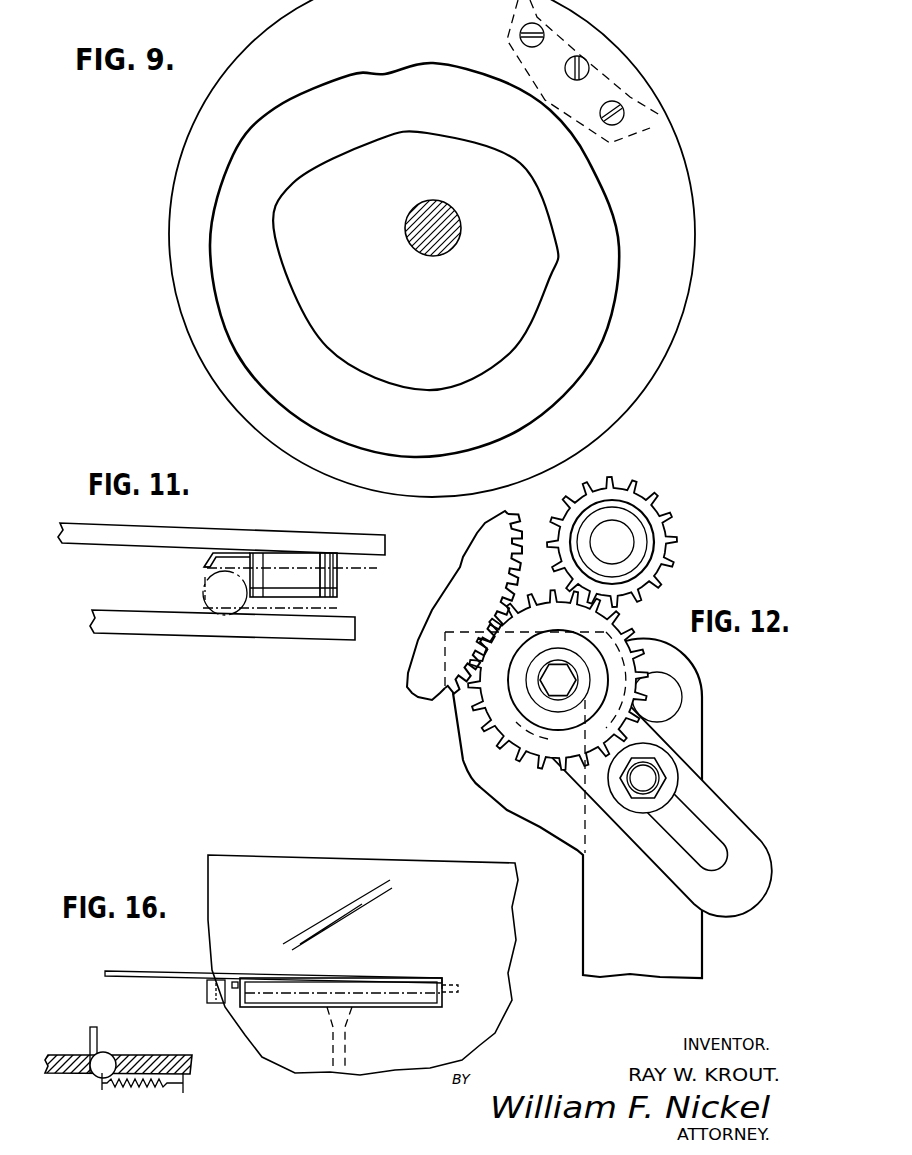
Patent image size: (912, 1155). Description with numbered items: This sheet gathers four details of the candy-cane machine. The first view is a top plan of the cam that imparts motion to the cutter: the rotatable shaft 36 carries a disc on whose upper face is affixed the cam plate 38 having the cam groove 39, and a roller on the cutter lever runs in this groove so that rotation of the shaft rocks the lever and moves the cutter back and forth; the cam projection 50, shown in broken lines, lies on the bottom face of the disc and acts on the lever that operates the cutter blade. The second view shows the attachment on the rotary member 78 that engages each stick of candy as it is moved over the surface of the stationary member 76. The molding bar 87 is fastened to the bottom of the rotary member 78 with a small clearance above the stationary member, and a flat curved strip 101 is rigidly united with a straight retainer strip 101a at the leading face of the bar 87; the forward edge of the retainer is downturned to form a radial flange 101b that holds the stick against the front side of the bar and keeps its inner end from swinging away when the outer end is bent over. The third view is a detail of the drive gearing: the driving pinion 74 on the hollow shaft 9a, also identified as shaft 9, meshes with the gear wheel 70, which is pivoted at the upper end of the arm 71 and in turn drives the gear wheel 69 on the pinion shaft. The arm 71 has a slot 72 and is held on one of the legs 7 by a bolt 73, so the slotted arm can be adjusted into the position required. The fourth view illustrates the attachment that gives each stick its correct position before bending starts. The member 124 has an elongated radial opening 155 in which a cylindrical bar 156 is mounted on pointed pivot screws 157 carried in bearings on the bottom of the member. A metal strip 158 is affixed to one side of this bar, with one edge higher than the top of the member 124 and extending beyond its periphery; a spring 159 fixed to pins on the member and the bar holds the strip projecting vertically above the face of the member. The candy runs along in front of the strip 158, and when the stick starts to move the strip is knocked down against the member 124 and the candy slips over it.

In FIG. 12, the legs 7 is at (697, 951).
In FIG. 12, the hollow shaft 9 is at (640, 530).
In FIG. 12, the hollow shaft 9a is at (640, 512).
In FIG. 9, the rotatable shaft 36 is at (424, 250).
In FIG. 9, the cam plate 38 is at (670, 307).
In FIG. 9, the cam groove 39 is at (217, 268).
In FIG. 9, the cam projection 50 is at (650, 128).
In FIG. 12, the gear wheel 69 is at (408, 687).
In FIG. 12, the gear wheel 70 is at (541, 597).
In FIG. 12, the arm 71 is at (728, 808).
In FIG. 12, the slot 72 is at (720, 857).
In FIG. 12, the bolt 73 is at (652, 776).
In FIG. 12, the driving pinion 74 is at (668, 548).
In FIG. 11, the stationary member 76 is at (317, 632).
In FIG. 11, the rotary member 78 is at (130, 538).
In FIG. 11, the molding bar 87 is at (337, 588).
In FIG. 11, the curved strip 101 is at (363, 557).
In FIG. 11, the retainer strip 101a is at (235, 553).
In FIG. 11, the radial flange 101b is at (207, 565).
In FIG. 16, the member 124 is at (280, 880).
In FIG. 16, the elongated radial opening 155 is at (408, 982).
In FIG. 16, the cylindrical bar 156 is at (395, 1008).
In FIG. 16, the pivot screws 157 is at (458, 990).
In FIG. 16, the metal strip 158 is at (97, 1027).
In FIG. 16, the spring 159 is at (150, 1093).